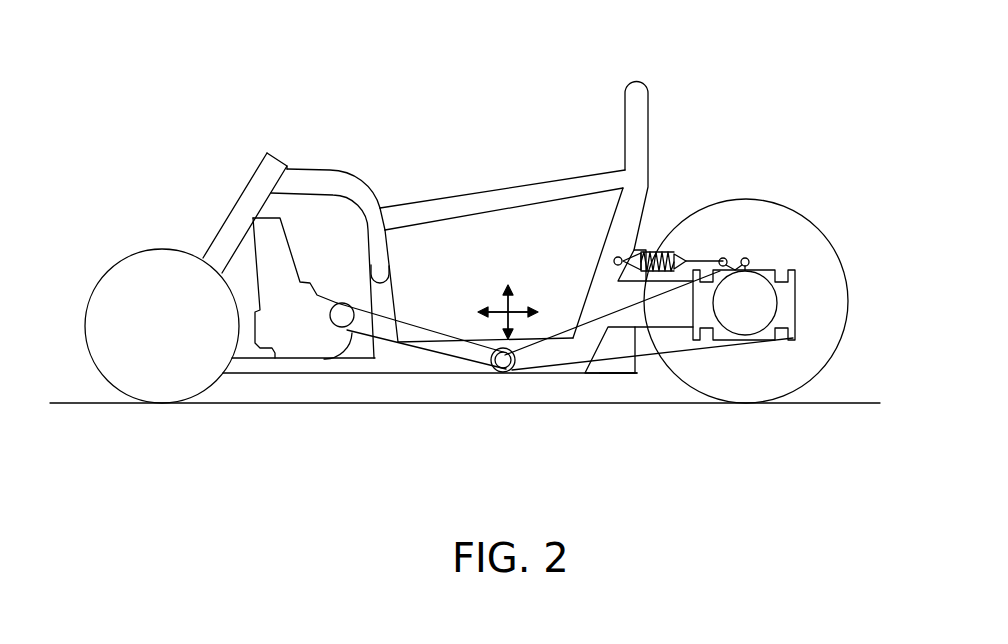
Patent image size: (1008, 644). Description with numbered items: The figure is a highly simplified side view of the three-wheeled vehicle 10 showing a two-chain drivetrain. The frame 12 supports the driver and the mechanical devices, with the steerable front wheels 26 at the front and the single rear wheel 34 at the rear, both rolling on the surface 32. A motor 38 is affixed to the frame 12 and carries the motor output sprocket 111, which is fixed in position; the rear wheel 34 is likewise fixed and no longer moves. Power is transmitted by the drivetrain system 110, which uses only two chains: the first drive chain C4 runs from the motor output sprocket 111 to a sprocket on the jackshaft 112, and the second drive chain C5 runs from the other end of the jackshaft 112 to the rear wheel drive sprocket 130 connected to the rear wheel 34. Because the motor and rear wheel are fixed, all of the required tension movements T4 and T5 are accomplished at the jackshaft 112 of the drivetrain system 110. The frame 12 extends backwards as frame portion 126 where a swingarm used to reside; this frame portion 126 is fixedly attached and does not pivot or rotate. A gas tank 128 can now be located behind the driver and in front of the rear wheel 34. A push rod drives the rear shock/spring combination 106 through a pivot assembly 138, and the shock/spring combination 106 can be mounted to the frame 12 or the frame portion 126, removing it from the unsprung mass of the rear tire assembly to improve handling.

The three-wheeled vehicle 10 is at (446, 92).
The frame 12 is at (483, 191).
The steerable front wheels 26 is at (112, 267).
The surface 32 is at (75, 402).
The single rear wheel 34 is at (828, 240).
The motor 38 is at (265, 245).
The rear shock/spring combination 106 is at (654, 252).
The drivetrain system 110 is at (503, 373).
The jackshaft 112 is at (503, 360).
The motor output sprocket 111 is at (342, 313).
The frame portion 126 is at (670, 317).
The gas tank 128 is at (622, 345).
The rear wheel drive sprocket 130 is at (765, 303).
The pivot assembly 138 is at (733, 260).
The first drive chain C4 is at (430, 355).
The second drive chain C5 is at (642, 352).
The tension movement T4 is at (505, 307).
The tension movement T5 is at (508, 312).